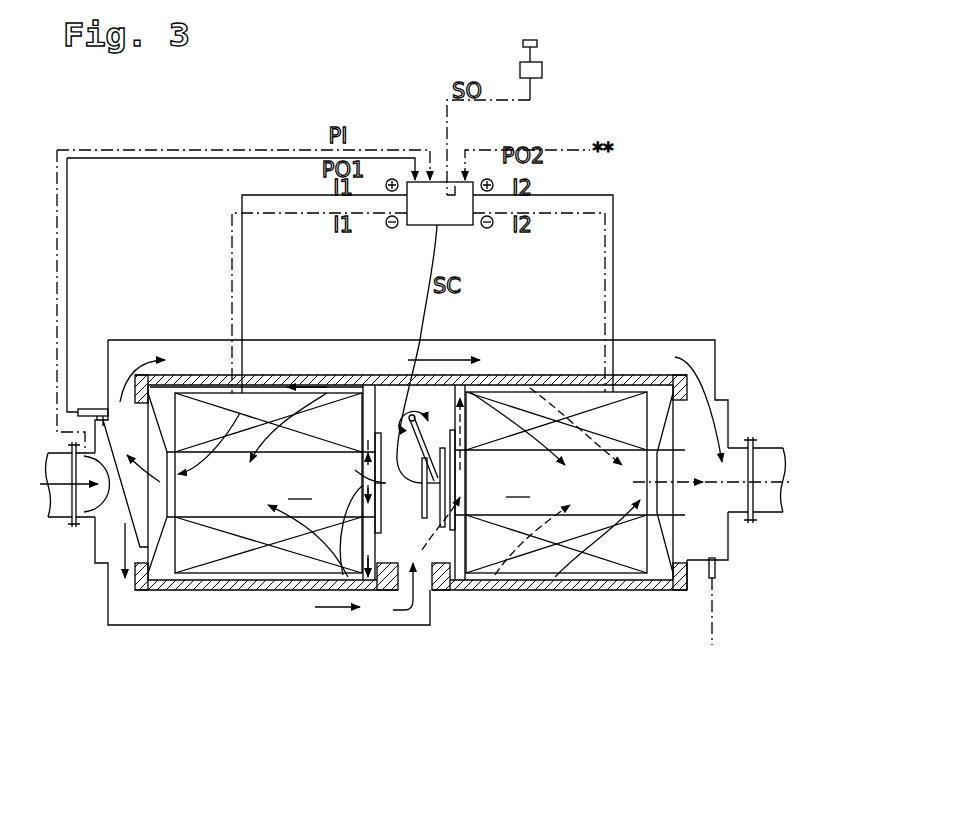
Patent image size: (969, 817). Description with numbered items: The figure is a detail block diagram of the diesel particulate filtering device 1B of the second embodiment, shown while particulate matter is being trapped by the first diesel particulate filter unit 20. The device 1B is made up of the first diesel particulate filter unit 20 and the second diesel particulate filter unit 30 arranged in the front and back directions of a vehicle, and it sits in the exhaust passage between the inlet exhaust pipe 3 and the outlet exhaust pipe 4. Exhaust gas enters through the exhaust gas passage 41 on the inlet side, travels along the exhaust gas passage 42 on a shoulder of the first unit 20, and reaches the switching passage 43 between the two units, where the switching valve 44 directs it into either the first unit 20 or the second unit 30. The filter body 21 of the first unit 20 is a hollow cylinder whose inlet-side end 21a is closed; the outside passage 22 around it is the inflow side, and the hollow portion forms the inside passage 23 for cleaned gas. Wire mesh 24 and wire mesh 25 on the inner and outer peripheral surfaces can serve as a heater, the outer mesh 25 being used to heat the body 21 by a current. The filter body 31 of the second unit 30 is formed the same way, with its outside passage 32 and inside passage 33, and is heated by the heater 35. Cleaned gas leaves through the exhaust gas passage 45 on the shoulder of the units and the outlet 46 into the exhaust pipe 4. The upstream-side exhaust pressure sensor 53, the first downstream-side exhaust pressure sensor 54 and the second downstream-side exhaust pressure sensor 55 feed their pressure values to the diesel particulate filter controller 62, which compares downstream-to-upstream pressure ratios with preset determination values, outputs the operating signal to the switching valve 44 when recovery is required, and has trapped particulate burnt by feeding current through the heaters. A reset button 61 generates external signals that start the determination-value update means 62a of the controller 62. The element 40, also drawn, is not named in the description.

The diesel particulate filtering device 1B is at (404, 528).
The exhaust pipe 3 is at (63, 462).
The exhaust pipe 4 is at (767, 462).
The first diesel particulate filter unit 20 is at (253, 592).
The filter body 21 is at (220, 575).
The end of the inlet side 21a is at (368, 570).
The outside passage 22 is at (218, 578).
The inside passage 23 is at (281, 482).
The wire mesh 24 is at (287, 393).
The wire mesh 25 is at (248, 452).
The second diesel particulate filter unit 30 is at (597, 592).
The filter body 31 is at (540, 577).
The outside passage 32 is at (550, 557).
The inside passage 33 is at (562, 482).
The heater 35 is at (643, 393).
The casing 40 is at (513, 339).
The exhaust gas passage 41 is at (110, 527).
The exhaust gas passage 42 is at (293, 610).
The switching passage 43 is at (398, 543).
The switching valve 44 is at (413, 409).
The exhaust gas passage 45 is at (172, 352).
The outlet 46 is at (710, 523).
The upstream-side exhaust pressure sensor 53 is at (100, 500).
The first downstream-side exhaust pressure sensor 54 is at (87, 408).
The second downstream-side exhaust pressure sensor 55 is at (716, 578).
The reset button 61 is at (541, 72).
The diesel particulate filter controller 62 is at (438, 202).
The determination-value update means 62a is at (455, 186).